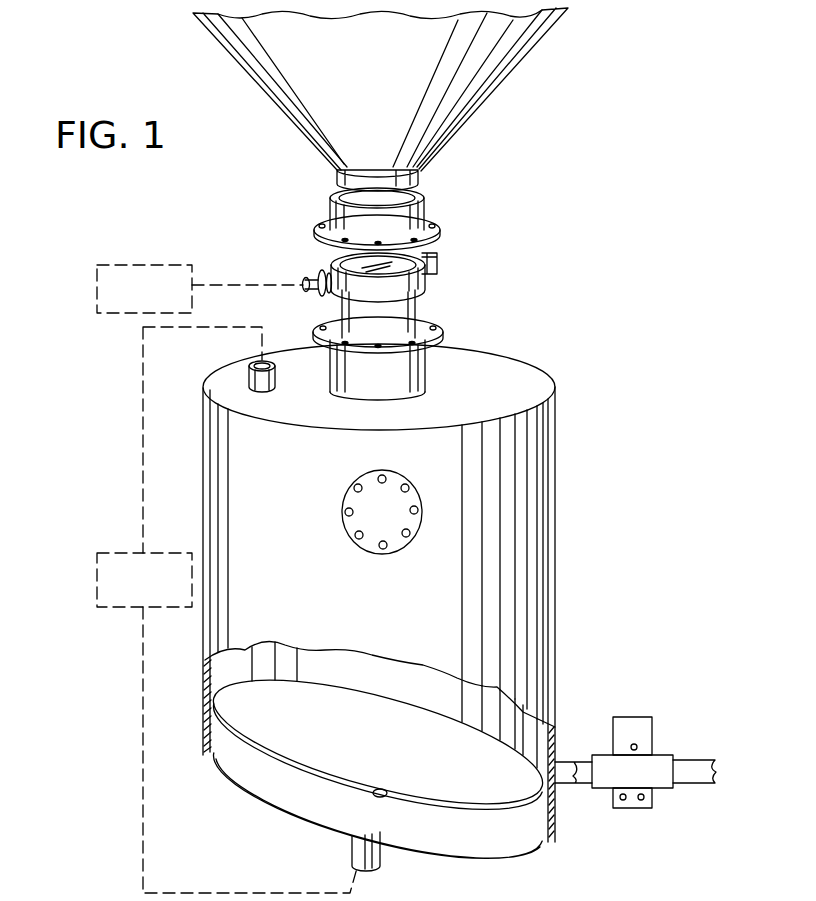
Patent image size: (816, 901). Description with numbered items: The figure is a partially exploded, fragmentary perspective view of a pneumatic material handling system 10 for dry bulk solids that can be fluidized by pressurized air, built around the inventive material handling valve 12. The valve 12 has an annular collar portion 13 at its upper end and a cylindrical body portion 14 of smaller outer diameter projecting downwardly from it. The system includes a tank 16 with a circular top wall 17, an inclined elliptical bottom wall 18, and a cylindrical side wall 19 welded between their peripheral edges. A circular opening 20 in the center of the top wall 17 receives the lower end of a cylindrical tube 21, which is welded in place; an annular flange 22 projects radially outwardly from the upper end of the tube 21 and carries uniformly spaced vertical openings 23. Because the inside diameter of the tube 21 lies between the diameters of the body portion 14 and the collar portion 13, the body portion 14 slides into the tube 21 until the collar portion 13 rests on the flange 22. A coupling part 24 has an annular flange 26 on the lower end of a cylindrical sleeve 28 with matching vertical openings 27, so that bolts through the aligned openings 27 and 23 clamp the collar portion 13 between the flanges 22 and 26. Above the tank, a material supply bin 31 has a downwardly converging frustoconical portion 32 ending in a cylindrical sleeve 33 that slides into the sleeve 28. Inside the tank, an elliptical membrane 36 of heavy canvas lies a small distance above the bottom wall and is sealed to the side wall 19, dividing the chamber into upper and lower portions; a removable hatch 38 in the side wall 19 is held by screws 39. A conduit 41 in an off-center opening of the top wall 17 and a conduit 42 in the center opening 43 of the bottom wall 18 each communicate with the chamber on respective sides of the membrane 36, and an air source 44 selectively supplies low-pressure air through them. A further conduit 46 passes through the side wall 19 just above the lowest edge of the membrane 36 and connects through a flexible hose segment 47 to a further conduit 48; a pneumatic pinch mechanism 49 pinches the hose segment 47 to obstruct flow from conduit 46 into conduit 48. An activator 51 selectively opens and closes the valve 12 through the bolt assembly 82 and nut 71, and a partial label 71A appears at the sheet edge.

The pneumatic material handling system 10 is at (469, 567).
The material handling valve 12 is at (440, 262).
The annular collar portion 13 is at (425, 291).
The cylindrical body portion 14 is at (420, 306).
The container or tank 16 is at (565, 488).
The circular top wall 17 is at (538, 385).
The inclined elliptical bottom wall 18 is at (260, 797).
The cylindrical side wall 19 is at (557, 584).
The circular opening 20 is at (372, 393).
The cylindrical tube 21 is at (390, 382).
The annular flange 22 is at (424, 331).
The vertically extending openings 23 is at (440, 325).
The coupling part 24 is at (365, 216).
The annular flange 26 is at (440, 240).
The vertical openings 27 is at (383, 206).
The cylindrical sleeve 28 is at (330, 207).
The material supply bin 31 is at (413, 89).
The frustoconical portion 32 is at (535, 26).
The cylindrical sleeve 33 is at (425, 173).
The elliptical membrane 36 is at (257, 738).
The removable hatch 38 is at (352, 537).
The screws 39 is at (347, 513).
The conduit 41 is at (250, 375).
The conduit 42 is at (348, 856).
The center opening 43 is at (375, 794).
The air source 44 is at (97, 557).
The conduit 46 is at (564, 785).
The flexible hose segment 47 is at (664, 778).
The further conduit 48 is at (705, 778).
The pneumatic pinch mechanism 49 is at (652, 718).
The activator 51 is at (97, 266).
The bolt 71 is at (310, 290).
The bolt head 82 is at (307, 270).
The bolt 71A is at (692, 894).